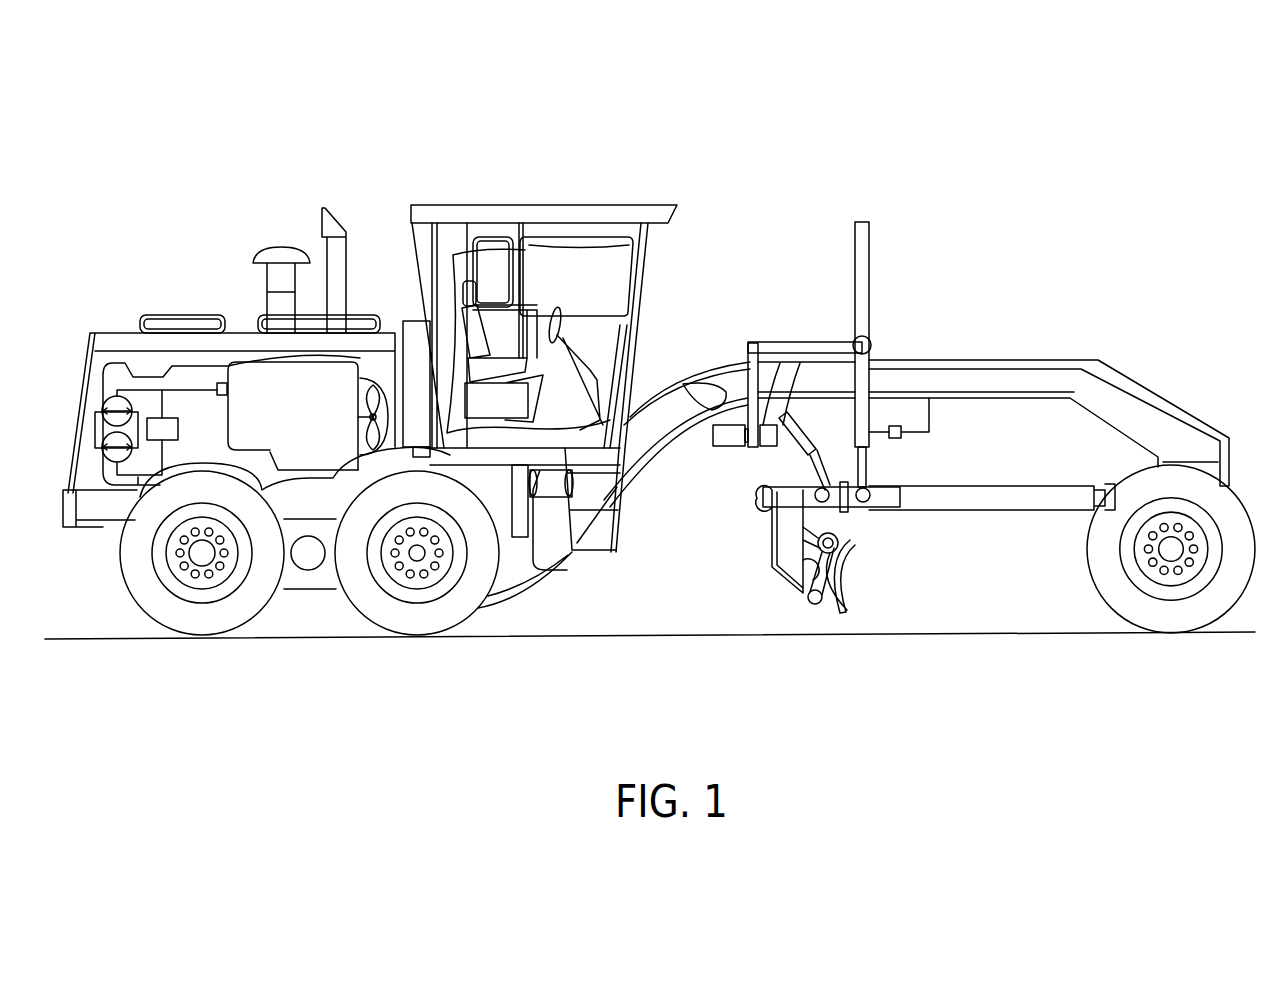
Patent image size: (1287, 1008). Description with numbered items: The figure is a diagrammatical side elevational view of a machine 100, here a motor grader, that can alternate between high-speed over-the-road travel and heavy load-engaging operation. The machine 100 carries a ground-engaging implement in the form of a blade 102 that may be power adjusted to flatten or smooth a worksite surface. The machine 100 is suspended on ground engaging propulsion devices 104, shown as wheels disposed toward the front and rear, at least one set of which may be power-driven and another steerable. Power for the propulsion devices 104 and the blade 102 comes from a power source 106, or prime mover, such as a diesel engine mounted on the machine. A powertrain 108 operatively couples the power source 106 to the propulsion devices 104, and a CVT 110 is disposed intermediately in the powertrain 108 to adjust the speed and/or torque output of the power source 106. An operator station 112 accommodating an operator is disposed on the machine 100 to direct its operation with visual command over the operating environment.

The machine 100 is at (706, 202).
The blade 102 is at (843, 570).
The propulsion devices 104 is at (413, 615).
The power source 106 is at (270, 385).
The powertrain 108 is at (165, 380).
The CVT 110 is at (95, 425).
The operator station 112 is at (523, 213).